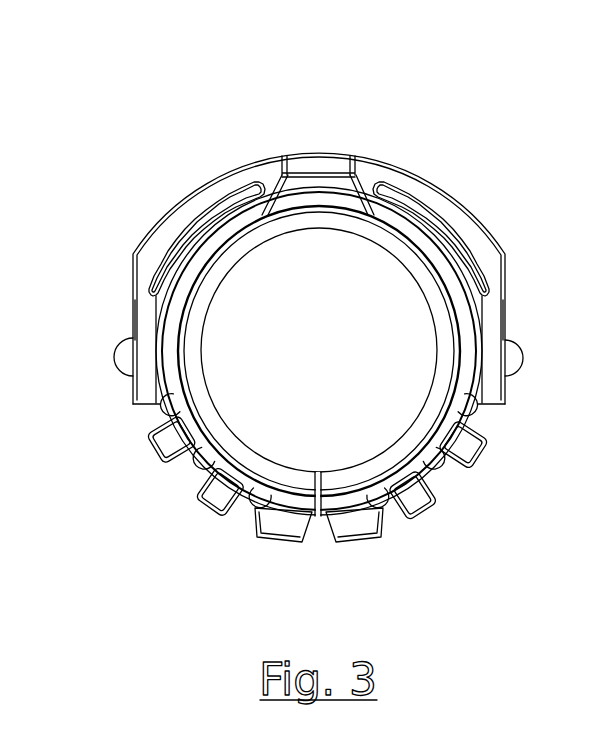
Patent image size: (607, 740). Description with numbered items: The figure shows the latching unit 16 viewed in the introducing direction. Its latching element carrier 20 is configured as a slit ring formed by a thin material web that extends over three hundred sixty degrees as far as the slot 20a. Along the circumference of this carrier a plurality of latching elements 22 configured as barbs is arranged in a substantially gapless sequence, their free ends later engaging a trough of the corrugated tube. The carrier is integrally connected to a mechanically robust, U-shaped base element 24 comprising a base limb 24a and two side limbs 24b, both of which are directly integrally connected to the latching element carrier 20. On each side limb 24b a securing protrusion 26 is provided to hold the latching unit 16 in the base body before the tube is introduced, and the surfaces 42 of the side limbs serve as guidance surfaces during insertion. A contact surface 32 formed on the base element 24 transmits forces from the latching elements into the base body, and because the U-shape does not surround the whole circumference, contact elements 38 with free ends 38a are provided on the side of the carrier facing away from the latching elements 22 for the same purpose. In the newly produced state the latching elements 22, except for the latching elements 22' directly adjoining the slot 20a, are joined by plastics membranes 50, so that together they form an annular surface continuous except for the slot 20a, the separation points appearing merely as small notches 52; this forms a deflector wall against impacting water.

The latching unit 16 is at (164, 113).
The latching element carrier 20 is at (218, 462).
The slot 20a is at (317, 512).
The latching elements 22 is at (319, 351).
The latching elements directly adjoining the slit 22' is at (326, 540).
The base element 24 is at (372, 170).
The base limb 24a is at (267, 170).
The side limbs 24b is at (147, 312).
The securing protrusion 26 is at (130, 357).
The contact surface 32 is at (215, 237).
The contact elements 38 is at (167, 435).
The free ends of the contact elements 38a is at (218, 492).
The guidance surfaces 42 is at (132, 330).
The plastics membranes 50 is at (445, 352).
The notches 52 is at (397, 428).